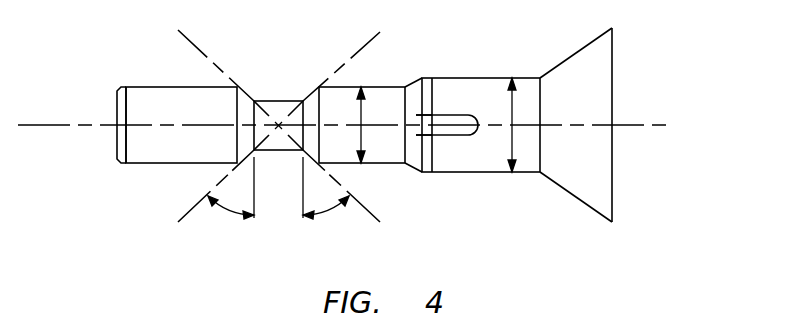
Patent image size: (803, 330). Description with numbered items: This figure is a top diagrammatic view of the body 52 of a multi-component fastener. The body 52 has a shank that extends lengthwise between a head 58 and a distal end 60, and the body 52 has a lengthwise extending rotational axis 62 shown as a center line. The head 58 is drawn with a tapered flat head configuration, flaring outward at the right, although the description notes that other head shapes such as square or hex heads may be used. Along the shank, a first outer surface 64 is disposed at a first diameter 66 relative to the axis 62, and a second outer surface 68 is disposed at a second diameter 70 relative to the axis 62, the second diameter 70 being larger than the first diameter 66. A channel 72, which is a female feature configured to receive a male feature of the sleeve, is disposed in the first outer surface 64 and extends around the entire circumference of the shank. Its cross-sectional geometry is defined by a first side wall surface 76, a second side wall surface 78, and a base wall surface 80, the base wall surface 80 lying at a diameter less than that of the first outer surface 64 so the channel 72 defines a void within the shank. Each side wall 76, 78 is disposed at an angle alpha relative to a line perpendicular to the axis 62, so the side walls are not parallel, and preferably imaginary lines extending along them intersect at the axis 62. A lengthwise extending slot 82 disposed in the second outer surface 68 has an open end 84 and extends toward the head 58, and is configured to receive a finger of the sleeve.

The body 52 is at (670, 166).
The head 58 is at (595, 97).
The distal end 60 is at (117, 135).
The rotational axis 62 is at (58, 125).
The first outer surface 64 is at (148, 163).
The first diameter 66 is at (362, 133).
The second outer surface 68 is at (455, 172).
The second diameter 70 is at (512, 105).
The channel 72 is at (273, 170).
The first side wall surface 76 is at (247, 97).
The second side wall surface 78 is at (310, 95).
The base wall surface 80 is at (275, 100).
The slot 82 is at (458, 115).
The open end 84 is at (432, 122).